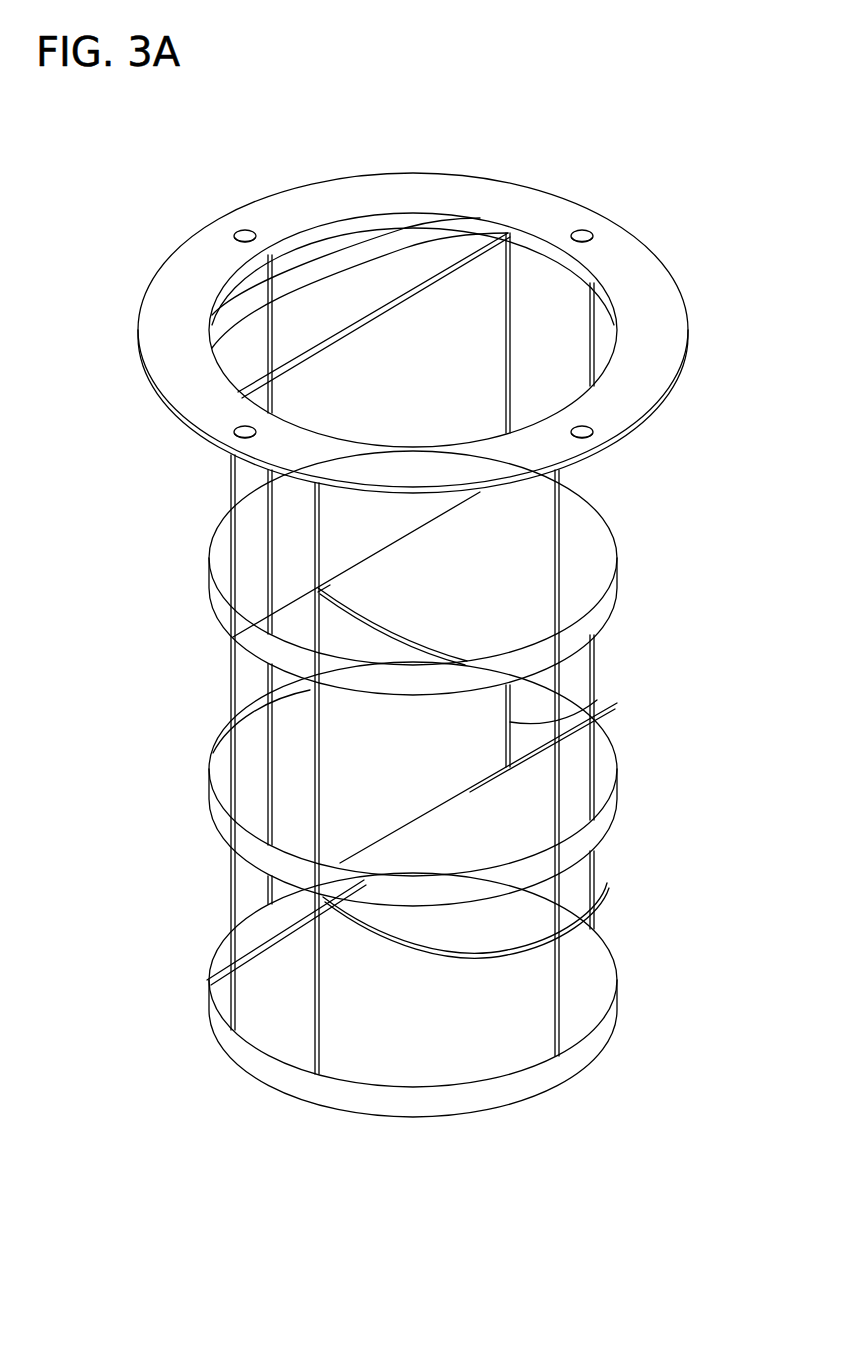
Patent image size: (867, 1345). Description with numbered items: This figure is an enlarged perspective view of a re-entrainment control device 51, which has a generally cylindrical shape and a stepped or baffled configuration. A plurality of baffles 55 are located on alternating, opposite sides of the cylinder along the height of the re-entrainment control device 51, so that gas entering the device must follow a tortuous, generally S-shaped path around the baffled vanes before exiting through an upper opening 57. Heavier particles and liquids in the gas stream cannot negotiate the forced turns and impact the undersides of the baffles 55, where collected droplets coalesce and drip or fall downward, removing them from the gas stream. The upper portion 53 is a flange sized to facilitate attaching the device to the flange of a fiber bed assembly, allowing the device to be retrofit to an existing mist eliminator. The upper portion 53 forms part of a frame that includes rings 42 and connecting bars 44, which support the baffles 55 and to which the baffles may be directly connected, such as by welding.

The re-entrainment control device 51 is at (691, 210).
The upper portion 53 is at (320, 200).
The rings 42 is at (570, 280).
The connecting bars 44 is at (262, 306).
The baffles 55 is at (373, 288).
The upper opening 57 is at (475, 359).